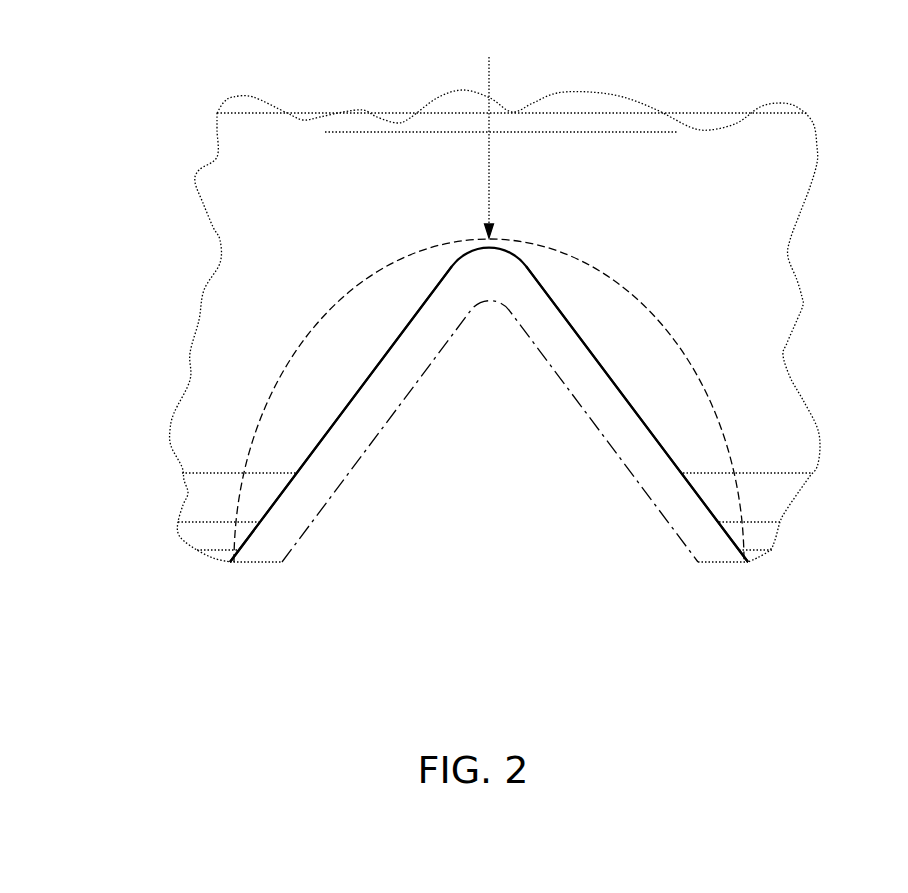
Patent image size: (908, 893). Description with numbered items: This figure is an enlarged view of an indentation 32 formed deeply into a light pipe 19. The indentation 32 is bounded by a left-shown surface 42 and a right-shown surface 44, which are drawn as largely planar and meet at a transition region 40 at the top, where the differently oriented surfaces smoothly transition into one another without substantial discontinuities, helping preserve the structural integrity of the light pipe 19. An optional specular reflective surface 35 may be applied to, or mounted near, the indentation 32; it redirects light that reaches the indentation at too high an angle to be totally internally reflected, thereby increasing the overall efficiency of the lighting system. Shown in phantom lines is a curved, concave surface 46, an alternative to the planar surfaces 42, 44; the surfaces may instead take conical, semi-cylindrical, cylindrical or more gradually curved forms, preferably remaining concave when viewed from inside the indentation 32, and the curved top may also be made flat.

The light pipe 19 is at (297, 225).
The indentation 32 is at (530, 270).
The specular reflective surface 35 is at (342, 483).
The transition region 40 is at (489, 134).
The left-shown surface 42 is at (383, 360).
The right-shown surface 44 is at (643, 423).
The curved, concave surface 46 is at (690, 382).